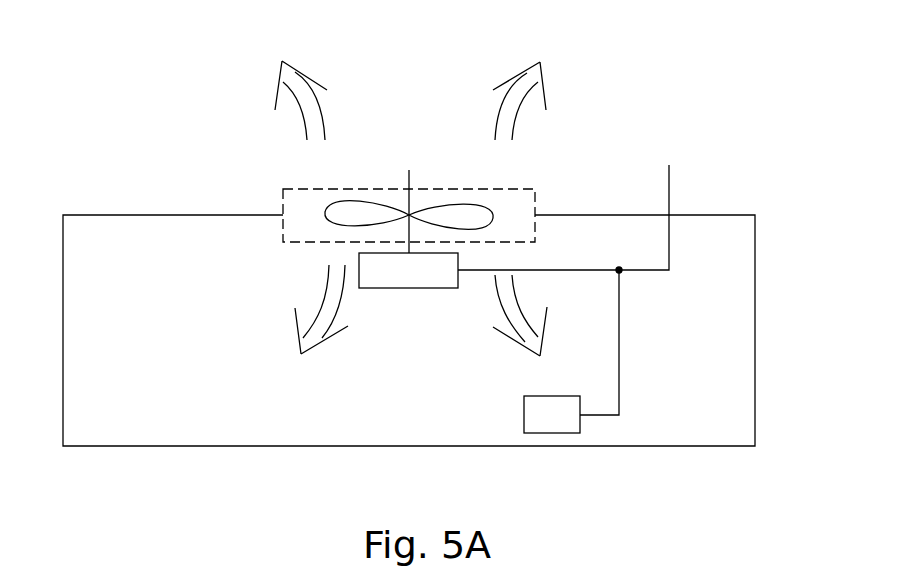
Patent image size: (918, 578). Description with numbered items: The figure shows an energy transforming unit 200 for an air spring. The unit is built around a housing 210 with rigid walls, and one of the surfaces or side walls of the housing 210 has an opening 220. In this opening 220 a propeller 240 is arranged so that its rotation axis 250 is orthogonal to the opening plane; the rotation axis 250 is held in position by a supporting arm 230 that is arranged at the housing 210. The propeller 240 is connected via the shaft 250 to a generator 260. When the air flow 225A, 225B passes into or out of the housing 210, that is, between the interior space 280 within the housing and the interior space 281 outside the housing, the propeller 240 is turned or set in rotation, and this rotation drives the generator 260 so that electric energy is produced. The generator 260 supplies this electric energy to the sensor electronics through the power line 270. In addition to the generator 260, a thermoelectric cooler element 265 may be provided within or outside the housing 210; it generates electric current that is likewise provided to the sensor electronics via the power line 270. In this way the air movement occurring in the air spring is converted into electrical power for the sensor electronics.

The energy transforming unit 200 is at (682, 148).
The housing 210 is at (754, 230).
The opening 220 is at (278, 183).
The air flow 225A is at (303, 122).
The air flow 225B is at (326, 292).
The supporting arm 230 is at (283, 203).
The propeller 240 is at (453, 213).
The rotation axis 250 is at (409, 215).
The generator 260 is at (409, 288).
The thermoelectric cooler element 265 is at (549, 422).
The power line 270 is at (669, 195).
The interior space 280 is at (720, 423).
The interior space 281 is at (92, 178).